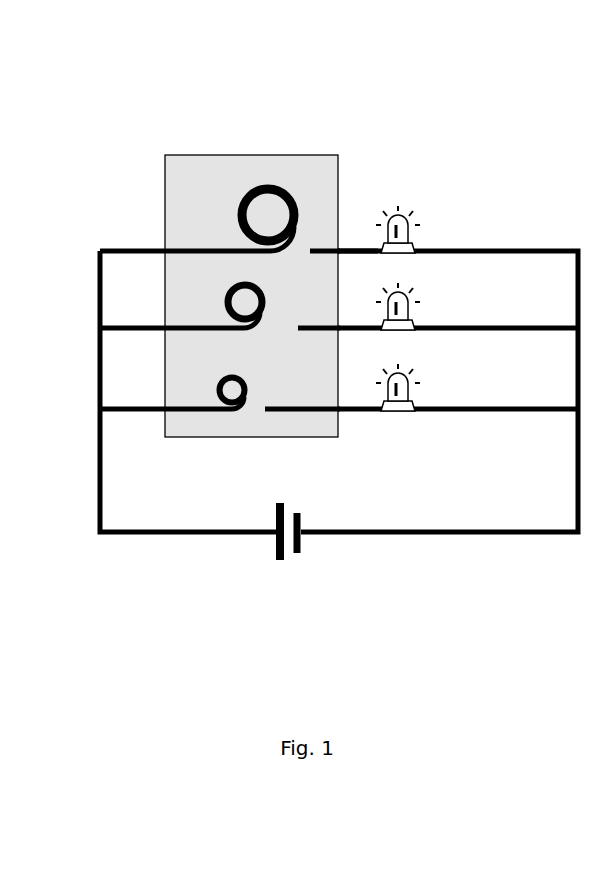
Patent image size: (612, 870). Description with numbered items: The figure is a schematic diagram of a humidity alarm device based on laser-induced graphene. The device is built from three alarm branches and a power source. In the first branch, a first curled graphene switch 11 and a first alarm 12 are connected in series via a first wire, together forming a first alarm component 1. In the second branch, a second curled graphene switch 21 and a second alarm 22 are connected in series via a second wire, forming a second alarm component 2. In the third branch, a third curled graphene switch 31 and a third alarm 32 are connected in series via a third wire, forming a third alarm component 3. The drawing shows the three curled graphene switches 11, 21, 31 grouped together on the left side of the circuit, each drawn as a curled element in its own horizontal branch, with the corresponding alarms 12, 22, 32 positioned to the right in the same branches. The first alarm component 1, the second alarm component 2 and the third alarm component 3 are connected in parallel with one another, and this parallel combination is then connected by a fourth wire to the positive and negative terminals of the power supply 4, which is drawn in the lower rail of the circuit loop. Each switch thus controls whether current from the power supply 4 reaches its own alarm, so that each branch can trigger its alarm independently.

The first alarm component 1 is at (513, 76).
The first curled graphene switch 11 is at (310, 187).
The first alarm 12 is at (423, 193).
The second alarm component 2 is at (35, 72).
The second curled graphene switch 21 is at (207, 282).
The second alarm 22 is at (357, 295).
The third alarm component 3 is at (384, 616).
The third curled graphene switch 31 is at (252, 417).
The third alarm 32 is at (410, 413).
The power supply 4 is at (263, 560).